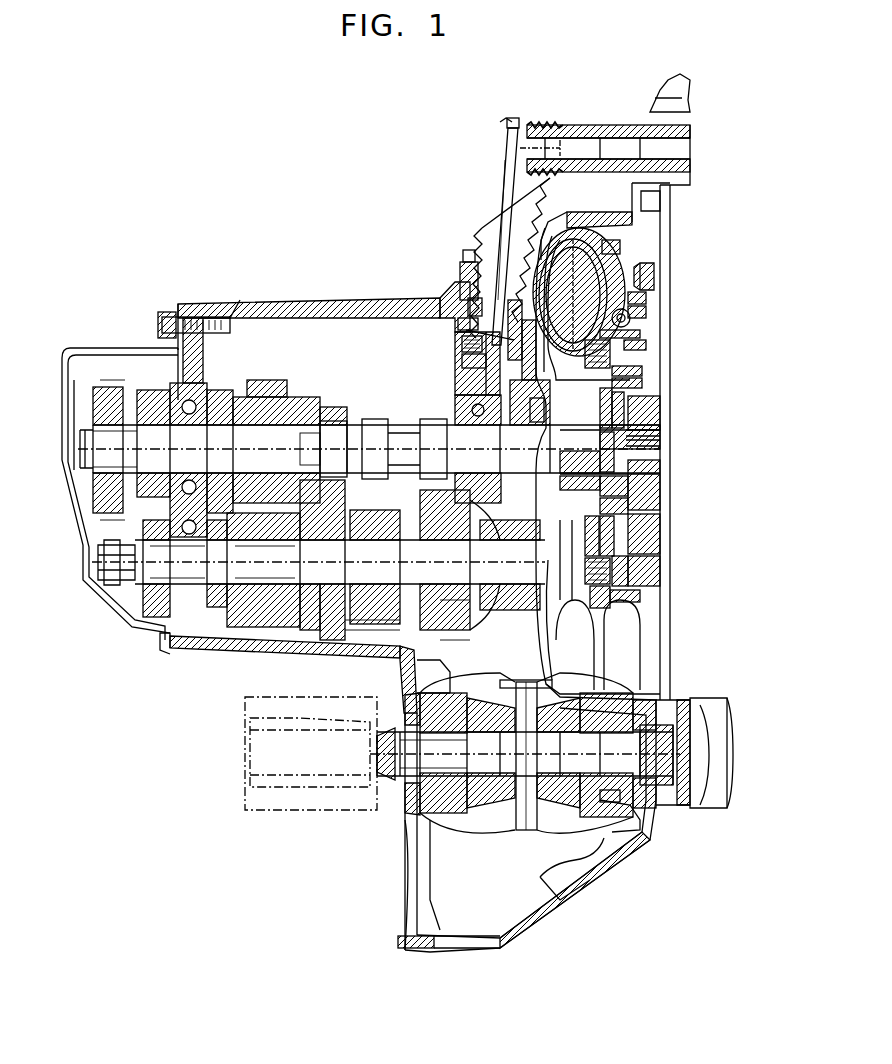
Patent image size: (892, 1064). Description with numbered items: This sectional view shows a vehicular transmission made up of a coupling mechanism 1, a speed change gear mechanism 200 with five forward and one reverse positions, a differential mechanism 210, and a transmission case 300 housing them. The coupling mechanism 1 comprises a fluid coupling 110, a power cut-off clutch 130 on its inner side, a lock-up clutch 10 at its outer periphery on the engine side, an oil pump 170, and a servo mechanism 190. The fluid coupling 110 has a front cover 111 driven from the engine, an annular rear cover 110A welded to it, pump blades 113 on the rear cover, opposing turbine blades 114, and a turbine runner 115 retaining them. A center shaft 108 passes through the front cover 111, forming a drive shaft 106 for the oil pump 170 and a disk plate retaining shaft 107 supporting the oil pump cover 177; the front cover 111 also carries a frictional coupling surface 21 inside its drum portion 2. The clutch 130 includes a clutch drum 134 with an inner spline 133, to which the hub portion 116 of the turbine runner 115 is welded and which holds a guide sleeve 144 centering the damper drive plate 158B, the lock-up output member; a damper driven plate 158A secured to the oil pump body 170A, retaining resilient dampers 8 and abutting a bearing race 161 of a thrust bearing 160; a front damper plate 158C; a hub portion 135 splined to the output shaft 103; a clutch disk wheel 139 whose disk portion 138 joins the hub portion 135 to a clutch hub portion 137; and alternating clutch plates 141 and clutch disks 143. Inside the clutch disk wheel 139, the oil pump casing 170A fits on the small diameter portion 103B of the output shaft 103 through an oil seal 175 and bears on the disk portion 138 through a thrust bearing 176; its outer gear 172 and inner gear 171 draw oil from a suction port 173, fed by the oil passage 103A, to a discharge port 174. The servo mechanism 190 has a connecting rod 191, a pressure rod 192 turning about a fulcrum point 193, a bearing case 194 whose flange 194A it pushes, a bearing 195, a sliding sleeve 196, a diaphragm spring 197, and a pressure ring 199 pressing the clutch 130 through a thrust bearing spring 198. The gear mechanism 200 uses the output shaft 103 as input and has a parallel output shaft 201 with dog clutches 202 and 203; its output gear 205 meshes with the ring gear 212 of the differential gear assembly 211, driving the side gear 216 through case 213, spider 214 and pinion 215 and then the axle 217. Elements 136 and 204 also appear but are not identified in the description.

The coupling mechanism 1 is at (643, 235).
The drum portion 2 is at (628, 243).
The dampers 8 is at (631, 318).
The lock-up clutch 10 is at (636, 215).
The frictional coupling surface 21 is at (622, 248).
The output shaft 103 is at (400, 433).
The oil passage 103A is at (422, 444).
The small diameter portion 103B is at (604, 486).
The drive shaft 106 is at (652, 476).
The disk plate retaining shaft 107 is at (630, 498).
The center shaft 108 is at (630, 512).
The fluid coupling 110 is at (576, 185).
The rear cover 110A is at (558, 257).
The front cover 111 is at (641, 337).
The pump blades 113 is at (575, 293).
The turbine blades 114 is at (602, 293).
The turbine runner 115 is at (656, 276).
The hub portion 116 is at (612, 358).
The power cut-off clutch 130 is at (650, 420).
The inner spline 133 is at (515, 312).
The clutch drum 134 is at (644, 384).
The hub portion 135 is at (616, 455).
The bolt 136 is at (652, 433).
The clutch hub portion 137 is at (652, 443).
The disk portion 138 is at (470, 397).
The clutch disk wheel 139 is at (492, 448).
The clutch plates 141 is at (525, 382).
The clutch disks 143 is at (529, 335).
The guide sleeve 144 is at (644, 372).
The damper driven plate 158A is at (646, 317).
The damper drive plate 158B is at (648, 299).
The front damper plate 158C is at (647, 346).
The thrust bearing 160 is at (614, 394).
The bearing race 161 is at (626, 404).
The oil pump 170 is at (612, 562).
The casing 170A is at (612, 594).
The inner gear 171 is at (601, 526).
The outer gear 172 is at (616, 536).
The suction port 173 is at (652, 468).
The discharge port 174 is at (652, 546).
The oil seal 175 is at (630, 566).
The thrust bearing 176 is at (642, 600).
The oil pump cover 177 is at (652, 578).
The servo mechanism 190 is at (502, 126).
The connecting rod 191 is at (511, 118).
The pressure rod 192 is at (506, 146).
The fulcrum point 193 is at (472, 305).
The bearing case 194 is at (458, 290).
The flange 194A is at (466, 326).
The bearing 195 is at (464, 344).
The sliding sleeve 196 is at (474, 361).
The diaphragm spring 197 is at (536, 400).
The thrust bearing spring 198 is at (462, 275).
The pressure ring 199 is at (468, 260).
The speed change gear mechanism 200 is at (256, 356).
The output shaft 201 is at (272, 572).
The dog clutch 202 is at (324, 650).
The dog clutch 203 is at (198, 322).
The end cover 204 is at (94, 382).
The output gear 205 is at (404, 656).
The differential mechanism 210 is at (386, 854).
The differential gear assembly 211 is at (520, 920).
The ring gear 212 is at (508, 942).
The case 213 is at (598, 835).
The spider 214 is at (540, 862).
The pinion 215 is at (572, 838).
The side gear 216 is at (628, 828).
The axle 217 is at (428, 758).
The transmission case 300 is at (213, 655).